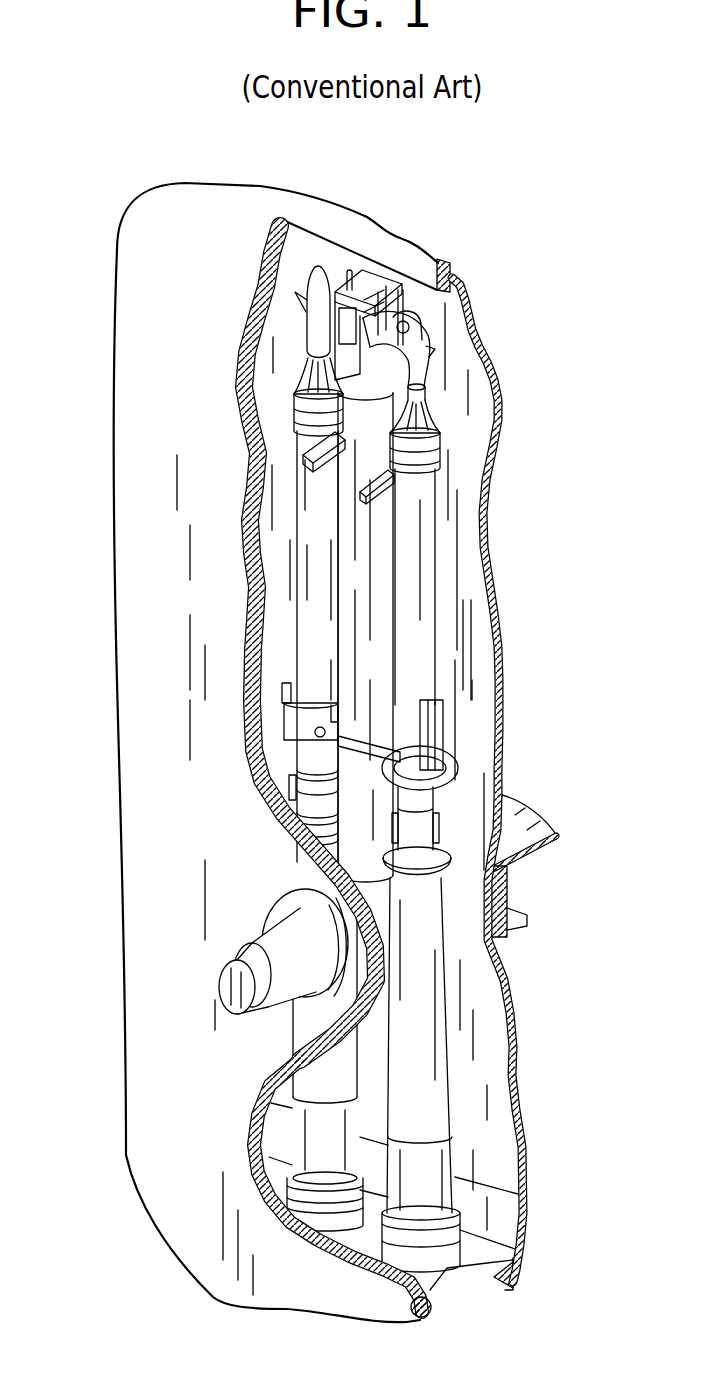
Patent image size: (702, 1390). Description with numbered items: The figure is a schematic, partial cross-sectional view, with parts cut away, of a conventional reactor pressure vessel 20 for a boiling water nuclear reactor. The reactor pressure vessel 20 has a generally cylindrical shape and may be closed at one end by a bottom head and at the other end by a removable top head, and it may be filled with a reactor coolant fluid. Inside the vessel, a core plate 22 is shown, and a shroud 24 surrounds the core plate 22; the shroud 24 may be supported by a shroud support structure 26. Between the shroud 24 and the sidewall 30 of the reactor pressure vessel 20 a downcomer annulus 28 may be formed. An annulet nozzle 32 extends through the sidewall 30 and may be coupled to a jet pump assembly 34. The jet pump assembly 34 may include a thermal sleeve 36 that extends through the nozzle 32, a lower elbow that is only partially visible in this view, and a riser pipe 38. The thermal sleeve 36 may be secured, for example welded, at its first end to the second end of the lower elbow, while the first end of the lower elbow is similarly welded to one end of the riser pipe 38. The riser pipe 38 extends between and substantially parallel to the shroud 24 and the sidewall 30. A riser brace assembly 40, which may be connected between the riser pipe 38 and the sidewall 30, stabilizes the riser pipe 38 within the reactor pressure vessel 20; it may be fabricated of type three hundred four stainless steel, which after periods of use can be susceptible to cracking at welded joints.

The reactor pressure vessel 20 is at (128, 1168).
The core plate 22 is at (547, 820).
The shroud 24 is at (482, 733).
The shroud support structure 26 is at (522, 1228).
The downcomer annulus 28 is at (470, 561).
The sidewall 30 is at (250, 1124).
The annulet nozzle 32 is at (264, 928).
The jet pump assembly 34 is at (289, 632).
The thermal sleeve 36 is at (219, 992).
The riser pipe 38 is at (332, 572).
The riser brace assembly 40 is at (308, 464).